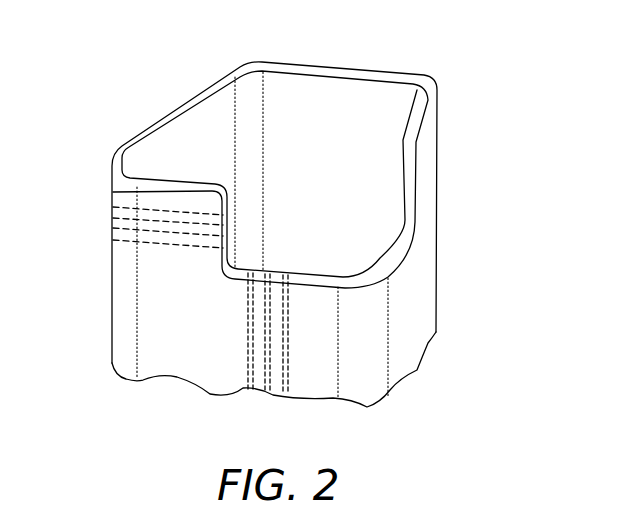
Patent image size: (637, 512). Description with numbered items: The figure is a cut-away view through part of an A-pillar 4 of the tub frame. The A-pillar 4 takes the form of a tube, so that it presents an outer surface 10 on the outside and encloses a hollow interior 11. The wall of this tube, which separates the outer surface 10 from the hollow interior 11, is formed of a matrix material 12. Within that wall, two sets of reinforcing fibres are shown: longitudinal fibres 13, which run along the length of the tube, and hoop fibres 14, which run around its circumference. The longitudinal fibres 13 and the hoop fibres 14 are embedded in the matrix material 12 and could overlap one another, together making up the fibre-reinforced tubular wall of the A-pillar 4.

The A-pillar 4 is at (453, 125).
The outer surface 10 is at (428, 275).
The hollow interior 11 is at (331, 97).
The matrix material 12 is at (402, 84).
The longitudinal fibres 13 is at (275, 403).
The hoop fibres 14 is at (109, 206).